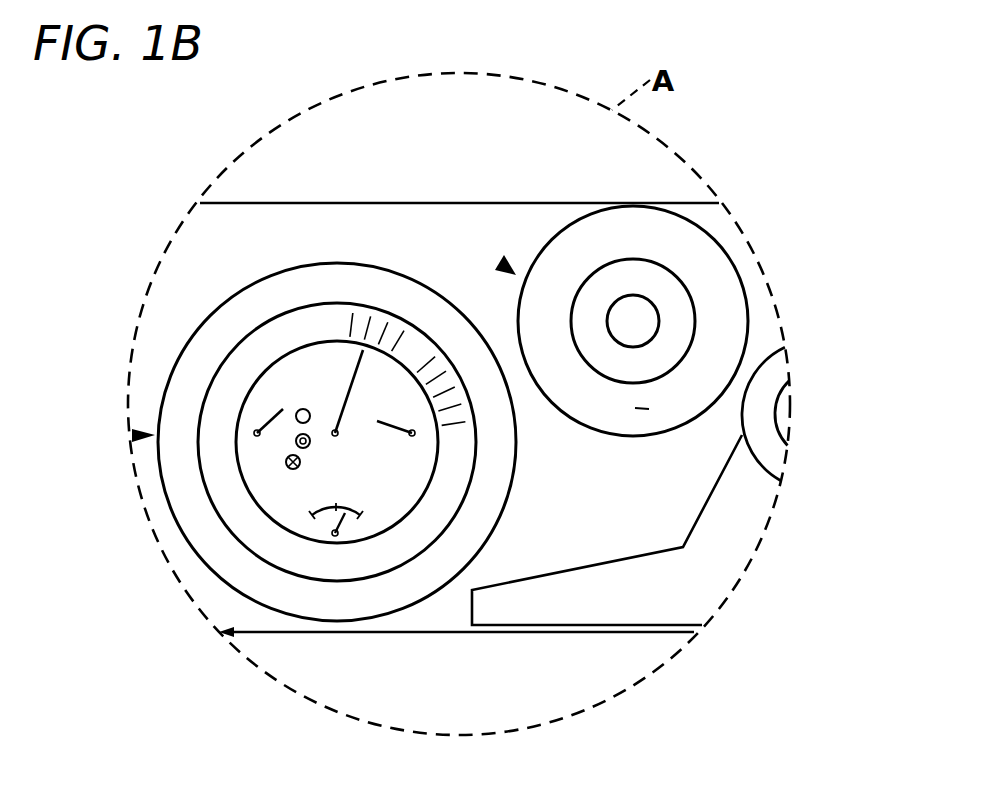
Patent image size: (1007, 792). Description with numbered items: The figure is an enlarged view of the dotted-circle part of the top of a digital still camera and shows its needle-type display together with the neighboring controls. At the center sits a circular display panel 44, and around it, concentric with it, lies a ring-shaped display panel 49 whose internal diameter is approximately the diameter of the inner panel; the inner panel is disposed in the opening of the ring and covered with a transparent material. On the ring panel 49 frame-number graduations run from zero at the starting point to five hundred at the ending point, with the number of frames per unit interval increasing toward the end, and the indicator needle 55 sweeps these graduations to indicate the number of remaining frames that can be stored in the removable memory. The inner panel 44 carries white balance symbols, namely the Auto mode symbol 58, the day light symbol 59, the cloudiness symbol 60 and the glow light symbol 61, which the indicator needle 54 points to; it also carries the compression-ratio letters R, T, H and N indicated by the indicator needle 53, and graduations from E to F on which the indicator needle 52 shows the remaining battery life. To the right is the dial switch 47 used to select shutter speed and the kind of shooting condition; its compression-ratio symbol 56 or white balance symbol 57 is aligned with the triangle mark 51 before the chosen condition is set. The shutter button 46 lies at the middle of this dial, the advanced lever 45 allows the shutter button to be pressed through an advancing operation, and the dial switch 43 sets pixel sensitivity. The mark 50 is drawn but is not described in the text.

The dial switch 43 is at (357, 597).
The display panel 44 is at (287, 465).
The advanced lever 45 is at (572, 606).
The shutter button 46 is at (666, 290).
The dial switch 47 is at (660, 222).
The display panel 49 is at (223, 478).
The index pointer 50 is at (133, 437).
The triangle mark 51 is at (503, 266).
The indicator needle 52 is at (332, 533).
The indicator needle 53 is at (390, 427).
The indicator needle 54 is at (275, 417).
The indicator needle 55 is at (352, 368).
The symbol 56 is at (547, 280).
The symbol 57 is at (550, 343).
The Auto mode symbol 58 is at (283, 388).
The day light symbol 59 is at (296, 418).
The cloudiness symbol 60 is at (296, 441).
The glow light symbol 61 is at (250, 470).